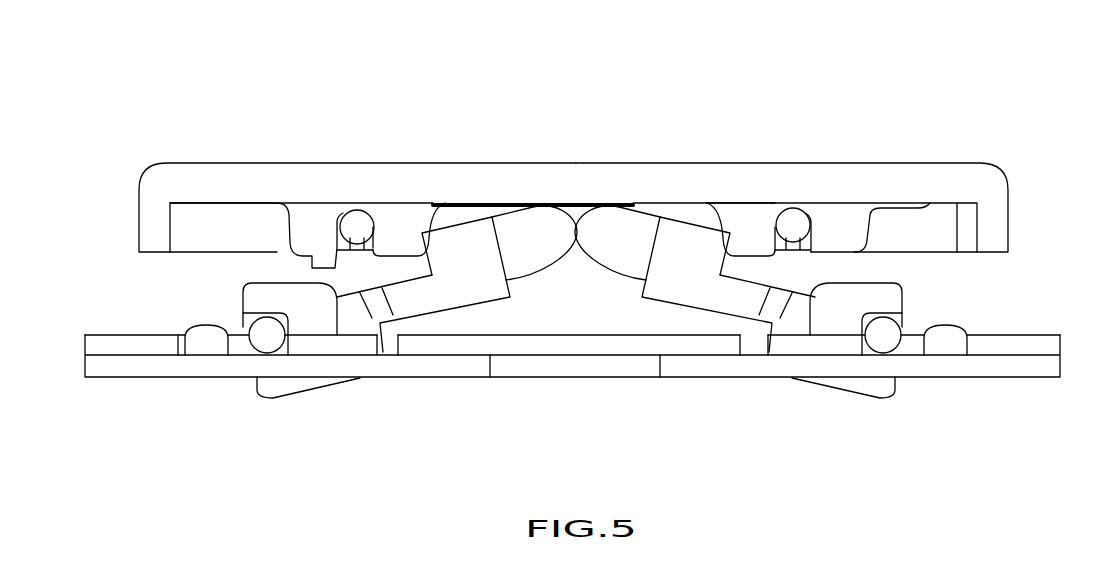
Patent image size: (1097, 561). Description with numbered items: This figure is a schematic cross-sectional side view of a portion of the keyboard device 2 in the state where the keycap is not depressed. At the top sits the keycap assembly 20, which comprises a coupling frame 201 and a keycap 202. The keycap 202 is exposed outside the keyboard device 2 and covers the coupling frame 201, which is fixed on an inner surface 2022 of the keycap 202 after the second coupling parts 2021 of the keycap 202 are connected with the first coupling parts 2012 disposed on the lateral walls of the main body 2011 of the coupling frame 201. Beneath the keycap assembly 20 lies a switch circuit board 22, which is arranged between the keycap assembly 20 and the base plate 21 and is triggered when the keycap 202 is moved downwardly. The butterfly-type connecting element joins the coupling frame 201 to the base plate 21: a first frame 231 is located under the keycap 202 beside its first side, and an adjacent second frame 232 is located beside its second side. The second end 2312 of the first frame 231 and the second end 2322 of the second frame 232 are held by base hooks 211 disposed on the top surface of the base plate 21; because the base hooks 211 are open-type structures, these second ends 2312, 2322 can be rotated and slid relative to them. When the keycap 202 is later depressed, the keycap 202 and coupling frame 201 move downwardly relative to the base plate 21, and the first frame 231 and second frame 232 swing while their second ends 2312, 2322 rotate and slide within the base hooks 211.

The keyboard device 2 is at (314, 56).
The keycap assembly 20 is at (888, 25).
The coupling frame 201 is at (580, 207).
The main body 2011 is at (693, 222).
The first coupling part 2012 is at (794, 228).
The keycap 202 is at (518, 170).
The second coupling part 2021 is at (313, 222).
The inner surface 2022 is at (442, 205).
The base plate 21 is at (711, 369).
The base hook 211 is at (272, 302).
The switch circuit board 22 is at (1003, 340).
The first frame 231 is at (432, 296).
The second end of the first frame 2312 is at (260, 335).
The second frame 232 is at (716, 292).
The second end of the second frame 2322 is at (884, 337).